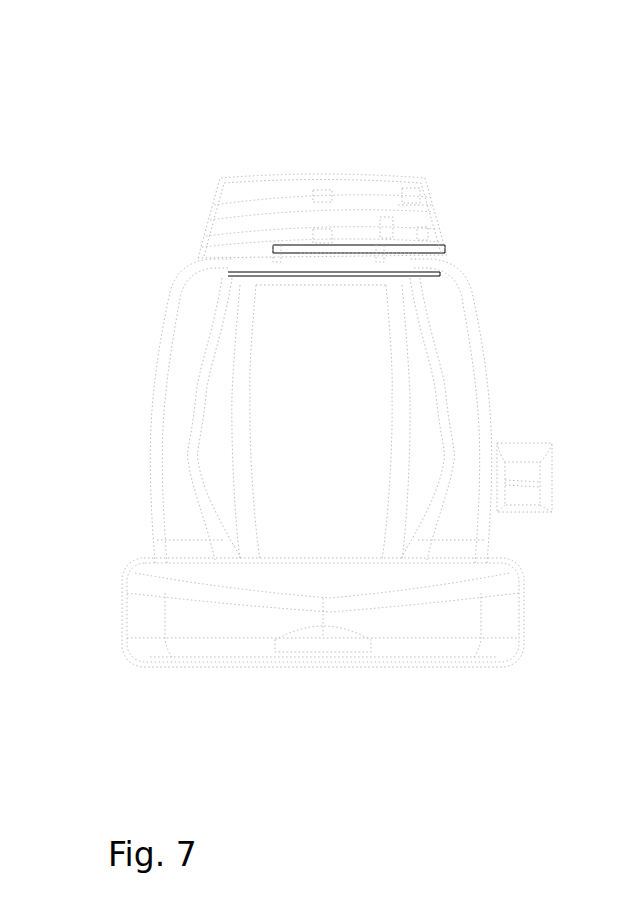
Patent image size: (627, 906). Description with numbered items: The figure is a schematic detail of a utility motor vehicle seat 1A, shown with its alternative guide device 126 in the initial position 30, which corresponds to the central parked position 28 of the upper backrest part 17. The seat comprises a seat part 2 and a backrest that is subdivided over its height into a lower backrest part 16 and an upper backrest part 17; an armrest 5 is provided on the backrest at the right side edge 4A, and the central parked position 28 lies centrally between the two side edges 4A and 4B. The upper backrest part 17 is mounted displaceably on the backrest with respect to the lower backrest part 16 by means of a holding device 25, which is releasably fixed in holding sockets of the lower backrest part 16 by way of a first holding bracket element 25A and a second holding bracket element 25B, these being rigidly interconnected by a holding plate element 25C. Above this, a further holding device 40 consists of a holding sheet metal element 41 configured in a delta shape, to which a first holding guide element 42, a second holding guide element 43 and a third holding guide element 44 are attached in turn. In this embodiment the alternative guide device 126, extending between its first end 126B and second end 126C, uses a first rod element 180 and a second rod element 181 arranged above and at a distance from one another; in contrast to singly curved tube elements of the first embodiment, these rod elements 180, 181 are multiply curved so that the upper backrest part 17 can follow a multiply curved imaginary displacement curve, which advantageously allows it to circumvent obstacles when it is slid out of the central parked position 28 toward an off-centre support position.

The utility motor vehicle seat 1A is at (137, 80).
The seat part 2 is at (178, 650).
The right side edge 4A is at (492, 360).
The side edge 4B is at (150, 422).
The armrest 5 is at (547, 507).
The lower backrest part 16 is at (331, 439).
The upper backrest part 17 is at (138, 222).
The holding device 25 is at (217, 275).
The first holding bracket element 25A is at (268, 253).
The second holding bracket element 25B is at (375, 252).
The holding plate element 25C is at (323, 248).
The central parked position 28 is at (465, 130).
The initial position 30 is at (288, 713).
The holding device 40 is at (450, 188).
The holding sheet metal element 41 is at (420, 215).
The first holding guide element 42 is at (409, 186).
The second holding guide element 43 is at (383, 210).
The third holding guide element 44 is at (422, 239).
The alternative guide device 126 is at (150, 192).
The first end 126B is at (436, 82).
The second end 126C is at (228, 128).
The first rod element 180 is at (227, 198).
The second rod element 181 is at (213, 233).